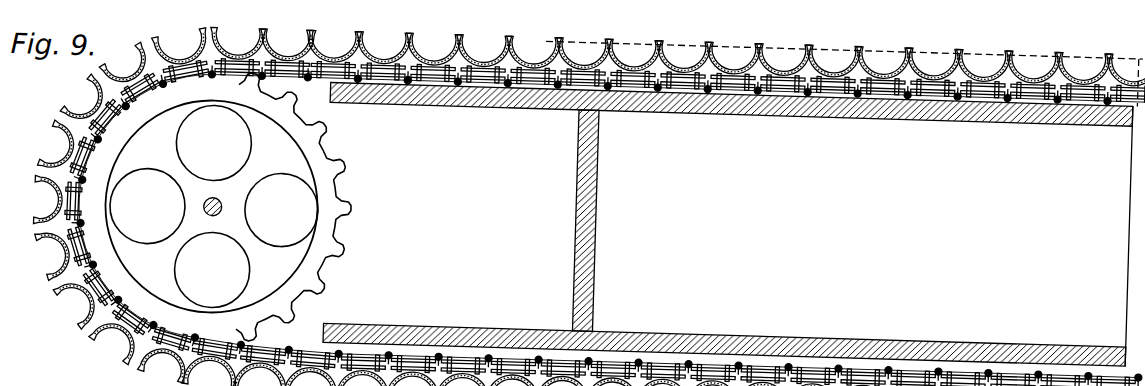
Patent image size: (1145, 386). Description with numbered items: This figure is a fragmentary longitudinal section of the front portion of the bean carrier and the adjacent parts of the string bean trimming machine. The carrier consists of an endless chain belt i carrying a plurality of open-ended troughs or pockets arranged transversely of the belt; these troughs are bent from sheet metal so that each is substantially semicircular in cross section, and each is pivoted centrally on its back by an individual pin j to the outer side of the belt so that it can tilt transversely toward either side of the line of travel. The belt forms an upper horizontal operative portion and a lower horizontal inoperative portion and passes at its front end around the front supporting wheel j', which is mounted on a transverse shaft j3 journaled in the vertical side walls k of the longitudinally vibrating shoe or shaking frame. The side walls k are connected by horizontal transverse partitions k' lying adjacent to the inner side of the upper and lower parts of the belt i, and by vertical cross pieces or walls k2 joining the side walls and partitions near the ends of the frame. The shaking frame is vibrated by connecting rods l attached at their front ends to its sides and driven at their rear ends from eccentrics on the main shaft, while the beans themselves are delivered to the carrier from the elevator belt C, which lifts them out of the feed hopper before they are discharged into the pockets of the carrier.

The endless upright elevator belt C is at (586, 195).
The connecting rods l is at (334, 38).
The endless chain belt i is at (386, 82).
The pins j is at (598, 209).
The front supporting wheel j' is at (251, 207).
The transverse shaft j3 is at (224, 208).
The side walls k is at (733, 200).
The horizontal transverse partitions k' is at (728, 224).
The vertical cross pieces k2 is at (577, 161).